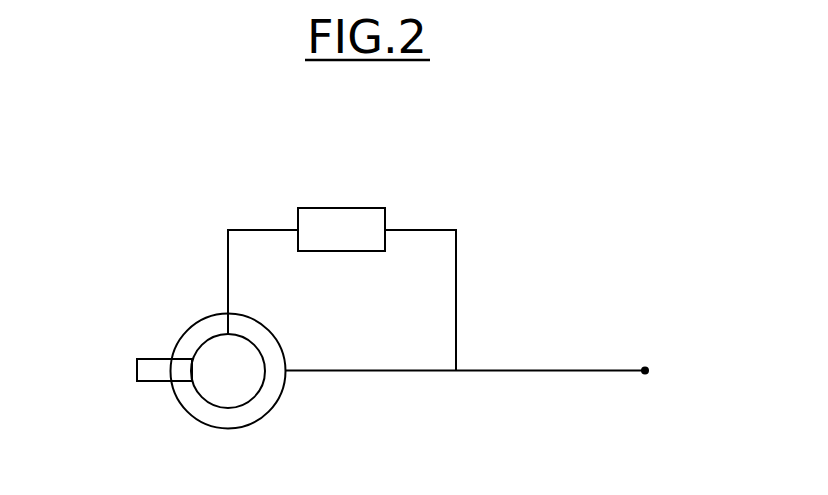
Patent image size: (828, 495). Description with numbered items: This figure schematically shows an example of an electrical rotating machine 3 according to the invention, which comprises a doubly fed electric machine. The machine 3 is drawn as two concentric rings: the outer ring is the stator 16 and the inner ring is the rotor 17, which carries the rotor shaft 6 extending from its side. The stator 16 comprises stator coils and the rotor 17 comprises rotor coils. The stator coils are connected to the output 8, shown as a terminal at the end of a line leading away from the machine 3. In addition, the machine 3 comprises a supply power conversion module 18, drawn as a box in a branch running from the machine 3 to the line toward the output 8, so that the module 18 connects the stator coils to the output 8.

The electrical rotating machine 3 is at (426, 160).
The rotor shaft 6 is at (151, 358).
The output 8 is at (645, 365).
The stator 16 is at (278, 413).
The rotor 17 is at (205, 407).
The supply power conversion module 18 is at (341, 229).